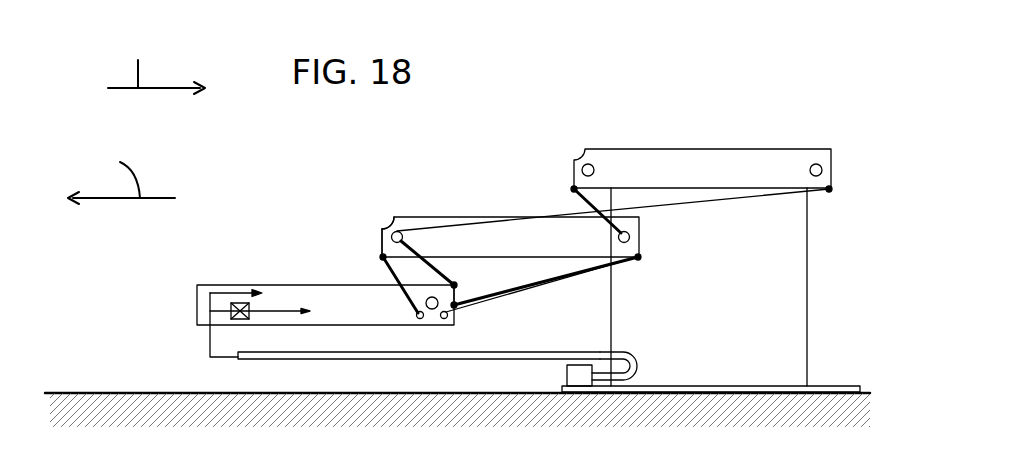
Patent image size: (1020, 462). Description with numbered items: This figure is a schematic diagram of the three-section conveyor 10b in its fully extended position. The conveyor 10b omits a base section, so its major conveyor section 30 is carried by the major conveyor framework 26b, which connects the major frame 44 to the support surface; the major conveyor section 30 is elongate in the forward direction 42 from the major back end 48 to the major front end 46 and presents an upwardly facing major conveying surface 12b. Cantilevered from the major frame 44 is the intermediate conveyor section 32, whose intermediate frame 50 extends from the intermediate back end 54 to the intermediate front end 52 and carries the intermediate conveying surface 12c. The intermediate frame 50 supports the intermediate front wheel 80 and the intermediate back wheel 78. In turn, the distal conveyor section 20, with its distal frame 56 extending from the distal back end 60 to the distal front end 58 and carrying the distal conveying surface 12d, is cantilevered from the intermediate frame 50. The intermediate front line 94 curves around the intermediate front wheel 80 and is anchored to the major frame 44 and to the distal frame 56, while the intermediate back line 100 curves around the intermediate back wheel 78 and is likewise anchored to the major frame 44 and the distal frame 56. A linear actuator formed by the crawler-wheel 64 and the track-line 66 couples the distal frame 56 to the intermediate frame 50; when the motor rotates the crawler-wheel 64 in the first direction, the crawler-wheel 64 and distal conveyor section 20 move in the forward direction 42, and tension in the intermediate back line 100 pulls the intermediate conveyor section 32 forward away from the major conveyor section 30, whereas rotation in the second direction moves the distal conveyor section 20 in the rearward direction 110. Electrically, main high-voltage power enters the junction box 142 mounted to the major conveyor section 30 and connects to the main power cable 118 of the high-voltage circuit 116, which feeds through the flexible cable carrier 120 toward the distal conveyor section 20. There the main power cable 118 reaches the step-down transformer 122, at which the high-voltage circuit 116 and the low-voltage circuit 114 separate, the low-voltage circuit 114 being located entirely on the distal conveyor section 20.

The rearward direction 110 is at (138, 60).
The forward direction 42 is at (121, 177).
The conveyor 10b is at (205, 164).
The major conveying surface 12b is at (720, 144).
The major conveyor section 30 is at (720, 144).
The major frame 44 is at (616, 149).
The major back end 48 is at (832, 157).
The major front end 46 is at (572, 188).
The major conveyor framework 26b is at (611, 324).
The intermediate conveying surface 12c is at (499, 201).
The intermediate frame 50 is at (499, 210).
The intermediate front wheel 80 is at (403, 240).
The intermediate back wheel 78 is at (617, 237).
The intermediate back end 54 is at (641, 230).
The intermediate front end 52 is at (380, 229).
The intermediate conveyor section 32 is at (382, 247).
The intermediate front line 94 is at (415, 228).
The intermediate back line 100 is at (572, 203).
The track-line 66 is at (408, 297).
The distal back end 60 is at (457, 292).
The crawler-wheel 64 is at (432, 310).
The distal frame 56 is at (288, 280).
The distal conveying surface 12d is at (288, 291).
The distal front end 58 is at (288, 295).
The high-voltage circuit 116 is at (220, 292).
The distal conveyor section 20 is at (197, 293).
The low-voltage circuit 114 is at (298, 316).
The step-down transformer 122 is at (240, 324).
The main power cable 118 is at (210, 357).
The flexible cable carrier 120 is at (634, 355).
The junction box 142 is at (567, 377).